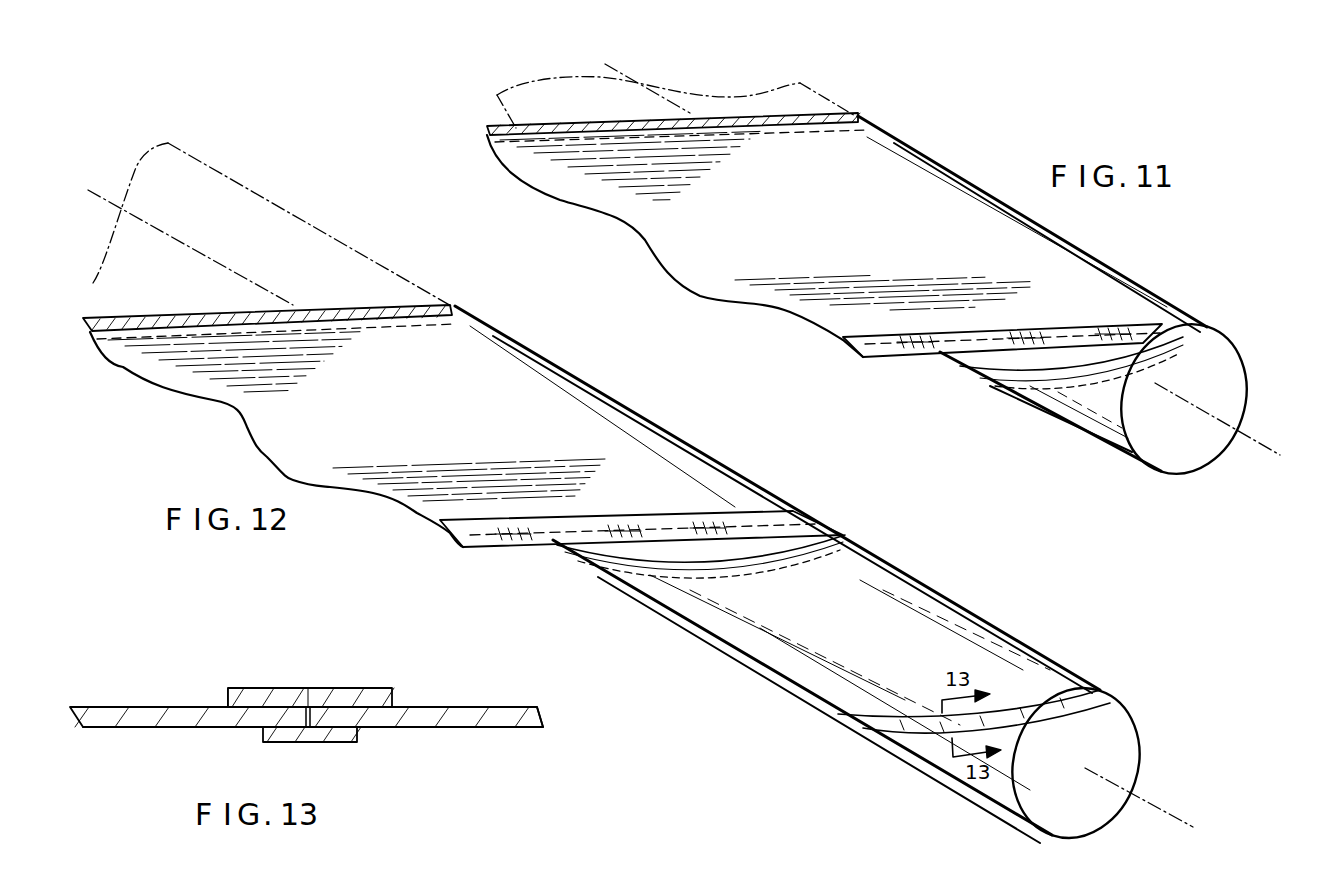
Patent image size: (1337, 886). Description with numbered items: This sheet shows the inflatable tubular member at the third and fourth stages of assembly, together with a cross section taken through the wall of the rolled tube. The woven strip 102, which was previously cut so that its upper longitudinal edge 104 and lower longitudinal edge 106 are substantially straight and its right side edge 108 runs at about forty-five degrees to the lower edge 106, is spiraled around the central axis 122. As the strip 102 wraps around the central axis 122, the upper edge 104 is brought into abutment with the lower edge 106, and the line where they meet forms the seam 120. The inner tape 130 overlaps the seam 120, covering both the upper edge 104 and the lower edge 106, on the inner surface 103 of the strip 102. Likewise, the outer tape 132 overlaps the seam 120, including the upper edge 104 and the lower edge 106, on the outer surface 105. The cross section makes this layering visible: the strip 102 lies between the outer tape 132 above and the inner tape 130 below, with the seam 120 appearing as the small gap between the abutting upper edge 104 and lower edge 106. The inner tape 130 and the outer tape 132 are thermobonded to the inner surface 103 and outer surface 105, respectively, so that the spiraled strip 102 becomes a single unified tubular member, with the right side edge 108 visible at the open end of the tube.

In FIG. 11, the strip 102 is at (912, 184).
In FIG. 12, the strip 102 is at (512, 372).
In FIG. 13, the strip 102 is at (503, 700).
In FIG. 13, the inner surface 103 is at (120, 727).
In FIG. 11, the upper longitudinal edge 104 is at (897, 358).
In FIG. 12, the upper longitudinal edge 104 is at (497, 548).
In FIG. 13, the upper longitudinal edge 104 is at (303, 720).
In FIG. 11, the outer surface 105 is at (784, 198).
In FIG. 12, the outer surface 105 is at (386, 388).
In FIG. 13, the outer surface 105 is at (120, 705).
In FIG. 11, the lower longitudinal edge 106 is at (518, 132).
In FIG. 12, the lower longitudinal edge 106 is at (120, 322).
In FIG. 13, the lower longitudinal edge 106 is at (373, 723).
In FIG. 11, the right side edge 108 is at (1193, 473).
In FIG. 12, the right side edge 108 is at (1097, 820).
In FIG. 13, the seam 120 is at (308, 707).
In FIG. 11, the central axis 122 is at (630, 80).
In FIG. 12, the central axis 122 is at (100, 193).
In FIG. 11, the inner tape 130 is at (770, 112).
In FIG. 12, the inner tape 130 is at (370, 305).
In FIG. 13, the inner tape 130 is at (333, 743).
In FIG. 11, the outer tape 132 is at (1093, 327).
In FIG. 12, the outer tape 132 is at (695, 520).
In FIG. 13, the outer tape 132 is at (360, 688).